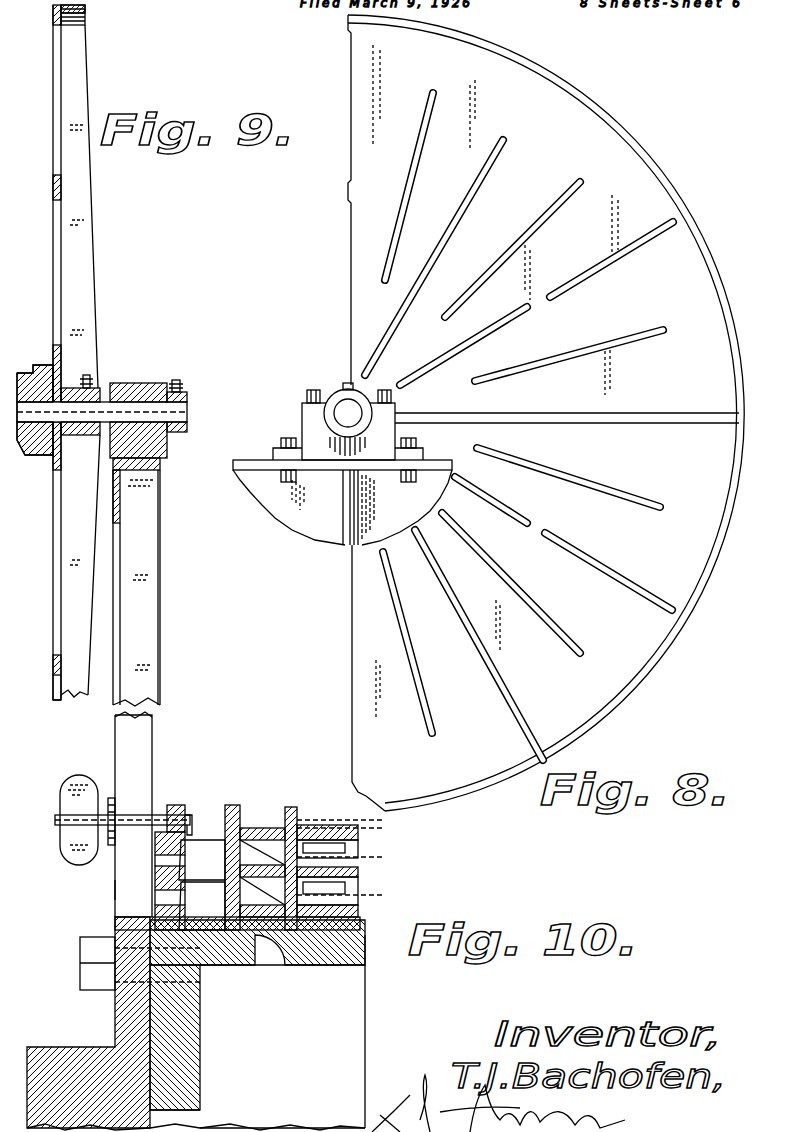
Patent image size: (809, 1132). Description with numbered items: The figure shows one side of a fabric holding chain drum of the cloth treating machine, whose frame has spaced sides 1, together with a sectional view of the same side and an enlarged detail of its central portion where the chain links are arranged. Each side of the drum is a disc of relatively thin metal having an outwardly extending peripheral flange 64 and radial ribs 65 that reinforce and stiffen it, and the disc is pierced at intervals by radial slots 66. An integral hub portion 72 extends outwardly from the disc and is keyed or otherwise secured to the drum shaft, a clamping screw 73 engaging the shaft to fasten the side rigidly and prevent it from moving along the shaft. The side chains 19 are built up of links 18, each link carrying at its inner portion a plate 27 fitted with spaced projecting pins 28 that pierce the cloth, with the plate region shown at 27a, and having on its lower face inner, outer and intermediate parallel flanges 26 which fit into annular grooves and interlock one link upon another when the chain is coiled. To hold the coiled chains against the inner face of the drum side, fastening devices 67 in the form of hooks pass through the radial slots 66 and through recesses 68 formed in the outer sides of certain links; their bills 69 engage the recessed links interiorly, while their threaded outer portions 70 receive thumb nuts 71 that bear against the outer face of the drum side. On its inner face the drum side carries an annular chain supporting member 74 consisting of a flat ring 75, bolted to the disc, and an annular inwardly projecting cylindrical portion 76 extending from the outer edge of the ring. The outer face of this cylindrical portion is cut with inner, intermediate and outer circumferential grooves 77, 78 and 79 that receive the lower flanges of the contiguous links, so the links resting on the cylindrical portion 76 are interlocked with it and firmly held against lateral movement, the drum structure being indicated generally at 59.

In FIG. 8, the sides 1 is at (486, 464).
In FIG. 9, the sides 1 is at (158, 631).
In FIG. 10, the links 18 is at (358, 840).
In FIG. 10, the side chains 19 is at (285, 822).
In FIG. 10, the parallel flanges 26 is at (285, 845).
In FIG. 10, the plate 27 is at (358, 873).
In FIG. 10, the rod 27a is at (340, 818).
In FIG. 10, the projecting pins 28 is at (308, 818).
In FIG. 8, the wheel 59 is at (612, 712).
In FIG. 9, the wheel 59 is at (53, 672).
In FIG. 10, the wheel 59 is at (109, 895).
In FIG. 8, the peripheral flanges 64 is at (692, 216).
In FIG. 9, the peripheral flanges 64 is at (82, 22).
In FIG. 8, the radial ribs 65 is at (465, 210).
In FIG. 9, the radial ribs 65 is at (87, 266).
In FIG. 8, the radial slots 66 is at (546, 534).
In FIG. 9, the radial slots 66 is at (58, 257).
In FIG. 10, the radial slots 66 is at (143, 754).
In FIG. 10, the fastening devices 67 is at (60, 800).
In FIG. 10, the recesses 68 is at (178, 805).
In FIG. 10, the bills 69 is at (232, 805).
In FIG. 10, the threaded outer portions 70 is at (56, 822).
In FIG. 10, the thumb nuts 71 is at (80, 780).
In FIG. 9, the hub portions 72 is at (100, 388).
In FIG. 10, the hub portions 72 is at (68, 1036).
In FIG. 9, the clamping screw 73 is at (91, 380).
In FIG. 10, the annular chain supporting members 74 is at (200, 1003).
In FIG. 9, the flat ring 75 is at (42, 456).
In FIG. 10, the flat ring 75 is at (185, 1060).
In FIG. 9, the cylindrical portion 76 is at (45, 365).
In FIG. 10, the cylindrical portion 76 is at (322, 965).
In FIG. 10, the inner circumferential groove 77 is at (365, 933).
In FIG. 10, the intermediate circumferential groove 78 is at (270, 960).
In FIG. 10, the outer circumferential groove 79 is at (185, 945).